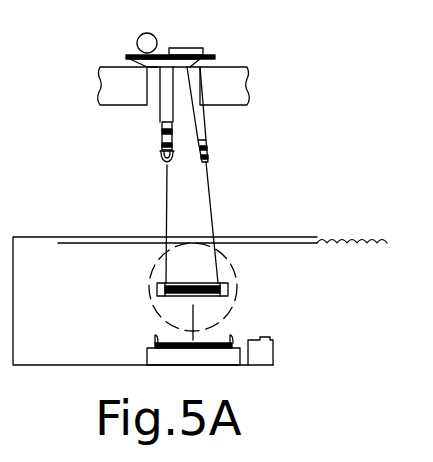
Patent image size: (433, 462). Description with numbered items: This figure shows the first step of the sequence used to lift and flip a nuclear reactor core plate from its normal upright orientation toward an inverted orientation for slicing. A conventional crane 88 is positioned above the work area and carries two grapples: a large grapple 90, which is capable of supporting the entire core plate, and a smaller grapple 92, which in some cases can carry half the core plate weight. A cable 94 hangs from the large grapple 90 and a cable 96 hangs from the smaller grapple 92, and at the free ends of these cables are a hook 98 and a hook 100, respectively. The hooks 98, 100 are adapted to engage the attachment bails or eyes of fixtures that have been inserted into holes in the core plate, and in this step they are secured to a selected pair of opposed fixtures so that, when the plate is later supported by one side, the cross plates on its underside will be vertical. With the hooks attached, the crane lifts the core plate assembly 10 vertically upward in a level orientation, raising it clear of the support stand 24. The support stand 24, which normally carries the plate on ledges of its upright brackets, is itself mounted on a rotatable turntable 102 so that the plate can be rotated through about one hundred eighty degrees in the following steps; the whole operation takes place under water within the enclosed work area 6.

The processing chamber 6 is at (152, 304).
The core plate assembly 10 is at (172, 304).
The support stand 24 is at (212, 337).
The crane 88 is at (256, 58).
The large grapple 90 is at (162, 140).
The smaller grapple 92 is at (207, 147).
The cable 94 is at (166, 190).
The cable 96 is at (212, 195).
The hook 98 is at (159, 284).
The hook 100 is at (235, 278).
The rotatable turntable 102 is at (233, 360).